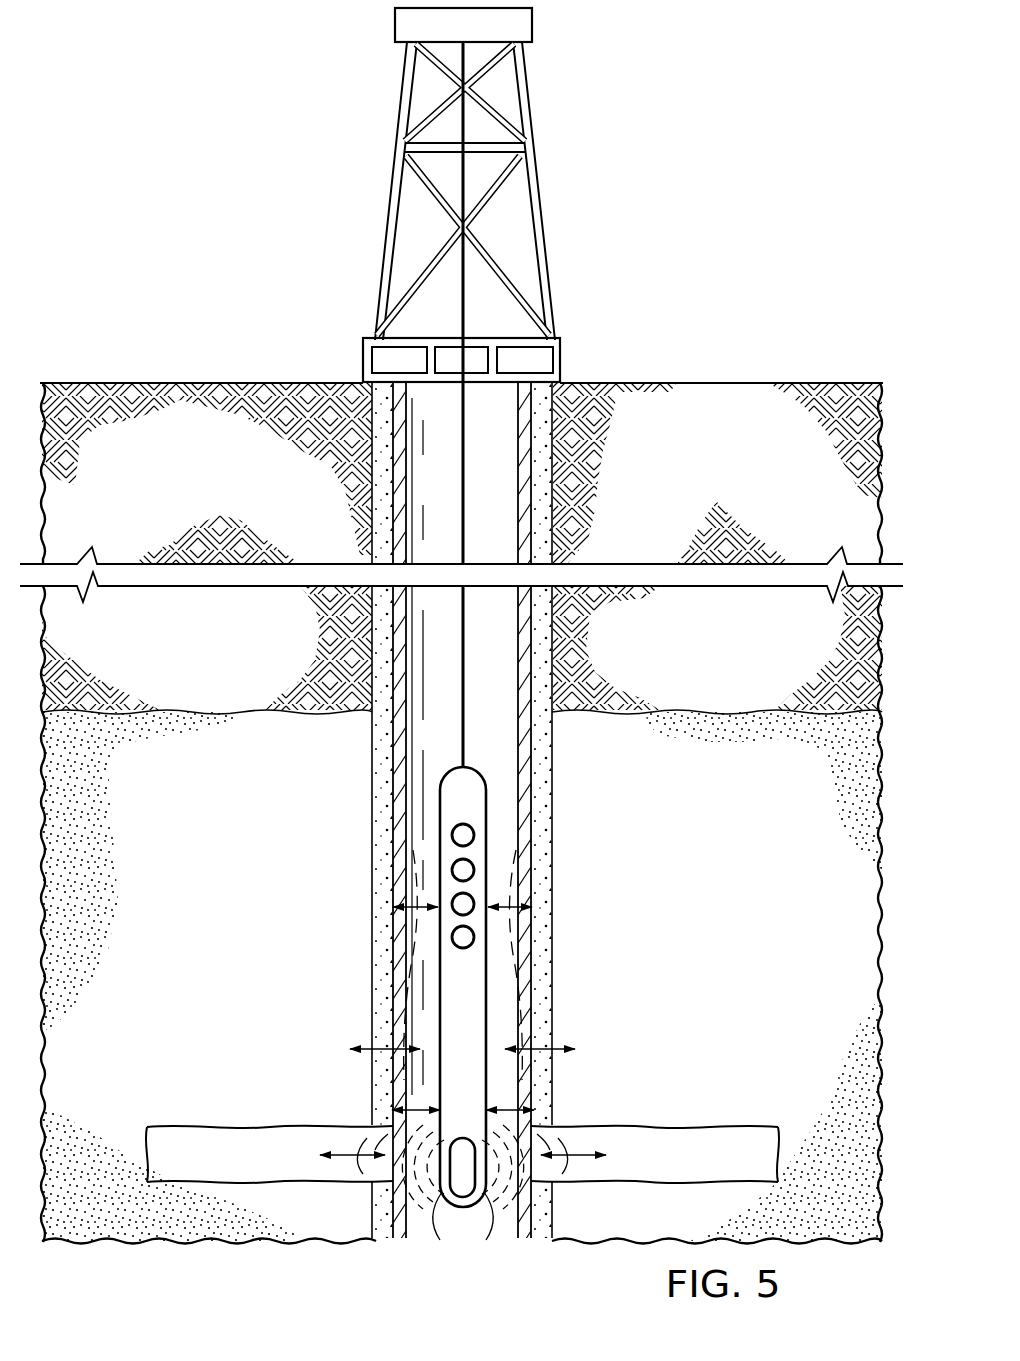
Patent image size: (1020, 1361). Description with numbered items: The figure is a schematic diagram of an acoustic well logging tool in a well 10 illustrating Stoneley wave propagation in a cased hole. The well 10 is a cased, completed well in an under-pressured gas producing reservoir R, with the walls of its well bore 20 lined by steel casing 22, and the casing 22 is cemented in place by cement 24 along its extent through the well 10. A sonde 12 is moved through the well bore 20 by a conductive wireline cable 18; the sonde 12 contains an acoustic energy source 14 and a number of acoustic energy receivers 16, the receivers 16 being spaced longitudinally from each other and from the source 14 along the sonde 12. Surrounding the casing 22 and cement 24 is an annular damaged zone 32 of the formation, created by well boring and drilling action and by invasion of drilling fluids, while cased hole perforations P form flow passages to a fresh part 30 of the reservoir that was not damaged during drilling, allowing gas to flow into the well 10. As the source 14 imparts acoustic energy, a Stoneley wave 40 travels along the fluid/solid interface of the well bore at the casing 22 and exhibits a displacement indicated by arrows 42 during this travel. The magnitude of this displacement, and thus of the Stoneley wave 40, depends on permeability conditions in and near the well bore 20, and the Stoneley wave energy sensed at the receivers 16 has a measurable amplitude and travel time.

The well 10 is at (463, 1254).
The sonde 12 is at (443, 1190).
The acoustic energy source 14 is at (480, 1177).
The acoustic energy receivers 16 is at (466, 818).
The conductive wireline cable 18 is at (462, 681).
The well bore 20 is at (417, 489).
The steel casing 22 is at (553, 466).
The cement 24 is at (378, 1242).
The fresh part of the reservoir 30 is at (139, 998).
The annular damaged zone 32 is at (879, 905).
The Stoneley wave 40 is at (392, 1003).
The arrows 42 is at (343, 1172).